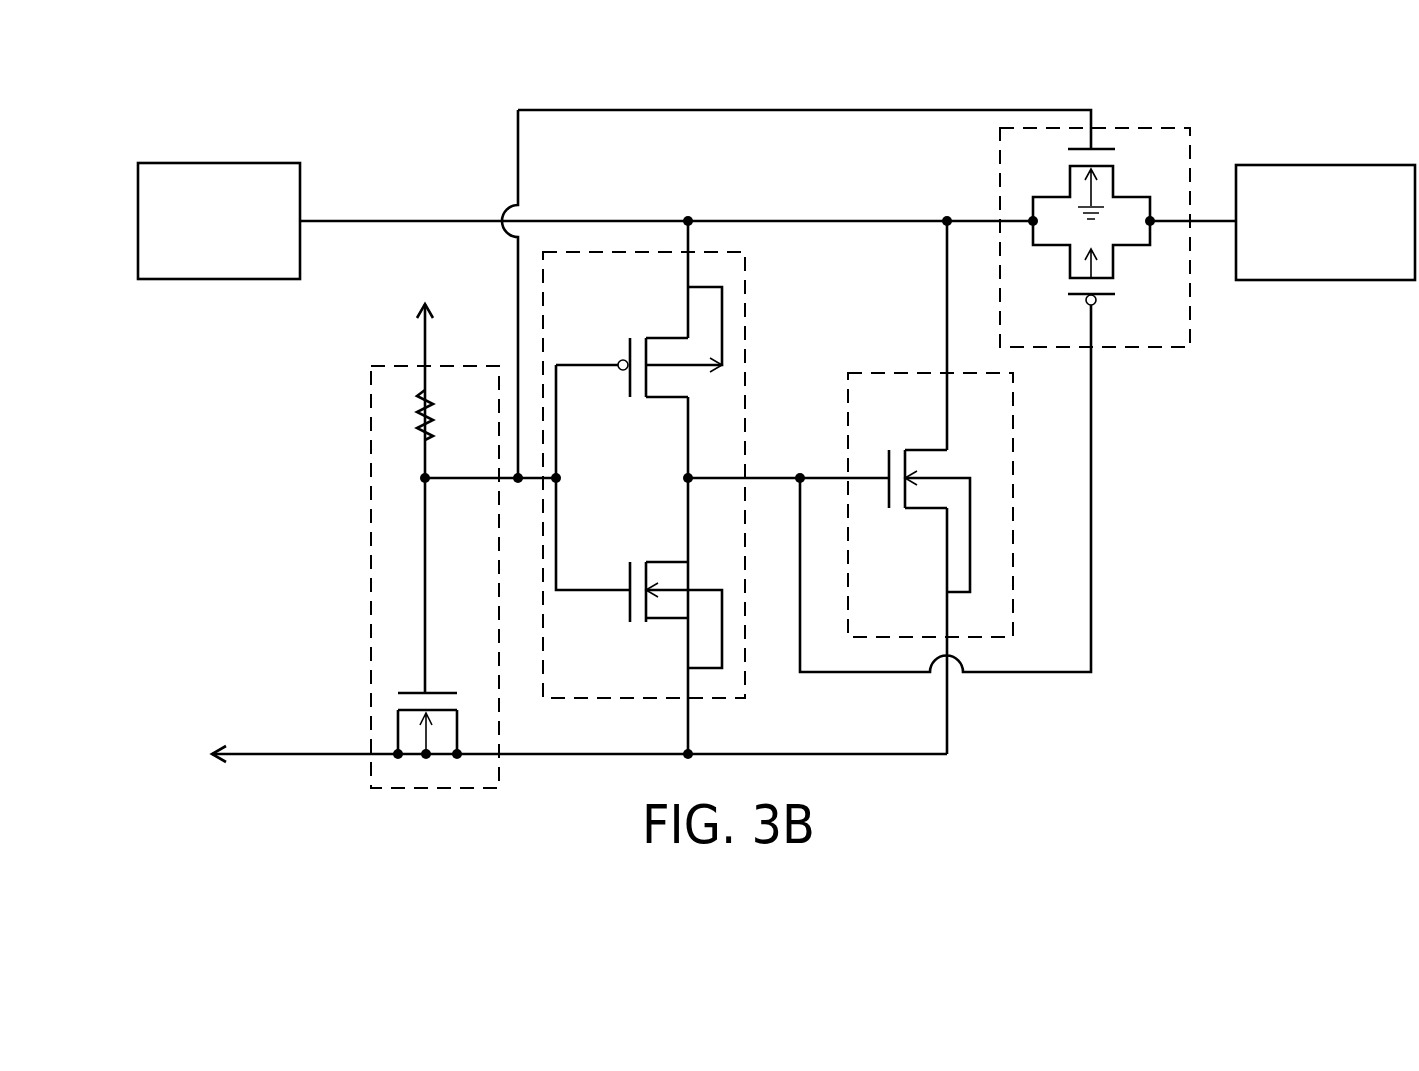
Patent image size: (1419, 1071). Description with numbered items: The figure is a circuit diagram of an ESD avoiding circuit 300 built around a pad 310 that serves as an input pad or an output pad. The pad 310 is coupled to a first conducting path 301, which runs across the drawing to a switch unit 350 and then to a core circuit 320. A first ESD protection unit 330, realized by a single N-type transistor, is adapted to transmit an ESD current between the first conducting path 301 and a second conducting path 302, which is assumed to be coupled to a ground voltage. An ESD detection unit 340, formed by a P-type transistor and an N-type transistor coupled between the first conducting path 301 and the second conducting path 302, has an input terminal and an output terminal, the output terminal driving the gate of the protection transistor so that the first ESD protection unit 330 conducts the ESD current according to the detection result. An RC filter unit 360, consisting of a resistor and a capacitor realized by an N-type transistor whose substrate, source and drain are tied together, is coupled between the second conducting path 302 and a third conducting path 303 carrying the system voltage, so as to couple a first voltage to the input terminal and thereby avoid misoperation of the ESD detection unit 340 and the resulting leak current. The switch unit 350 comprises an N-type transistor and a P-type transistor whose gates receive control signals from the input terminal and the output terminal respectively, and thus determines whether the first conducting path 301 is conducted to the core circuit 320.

The ESD avoiding circuit 300 is at (1275, 760).
The first conducting path 301 is at (390, 221).
The second conducting path 302 is at (288, 756).
The third conducting path 303 is at (425, 345).
The pad 310 is at (188, 163).
The core circuit 320 is at (1327, 165).
The first ESD protection unit 330 is at (1013, 473).
The ESD detection unit 340 is at (745, 277).
The switch unit 350 is at (1190, 152).
The RC filter unit 360 is at (371, 503).